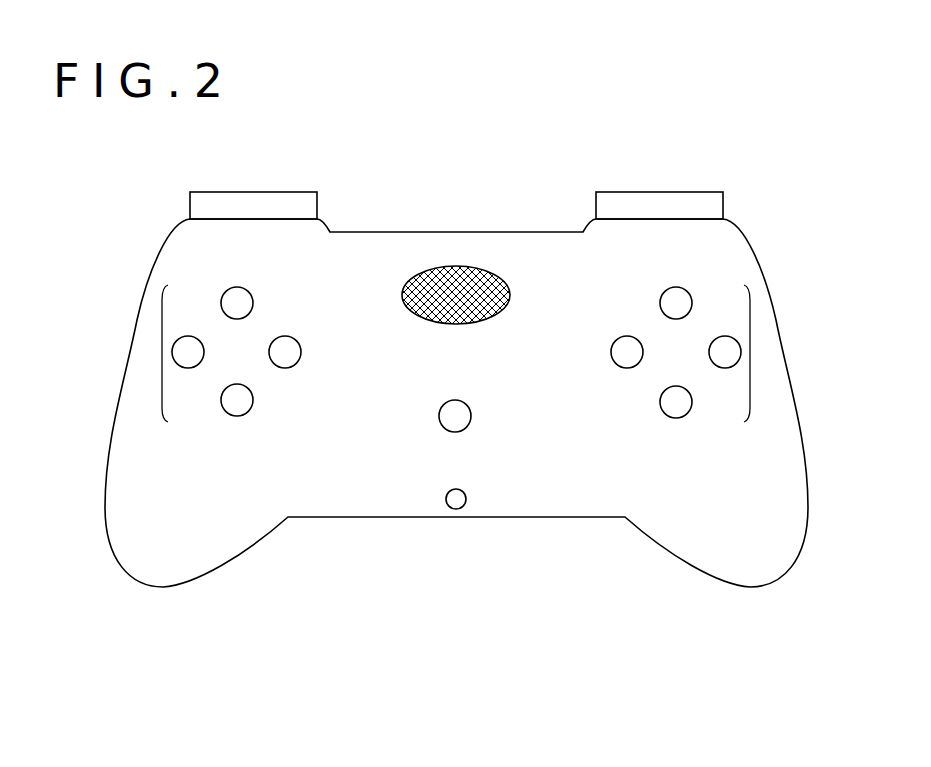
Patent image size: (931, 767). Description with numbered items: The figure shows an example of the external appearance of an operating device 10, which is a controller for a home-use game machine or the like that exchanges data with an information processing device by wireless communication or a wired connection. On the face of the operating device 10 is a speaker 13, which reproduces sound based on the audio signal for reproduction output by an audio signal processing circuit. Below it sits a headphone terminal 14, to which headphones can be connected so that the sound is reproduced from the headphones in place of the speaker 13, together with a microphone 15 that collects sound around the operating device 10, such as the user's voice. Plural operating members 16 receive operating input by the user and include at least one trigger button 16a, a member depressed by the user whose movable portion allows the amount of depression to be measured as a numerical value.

The operating device 10 is at (670, 640).
The speaker 13 is at (455, 266).
The headphone terminal 14 is at (448, 508).
The microphone 15 is at (468, 429).
The operating members 16 is at (161, 352).
The trigger button 16a is at (251, 191).